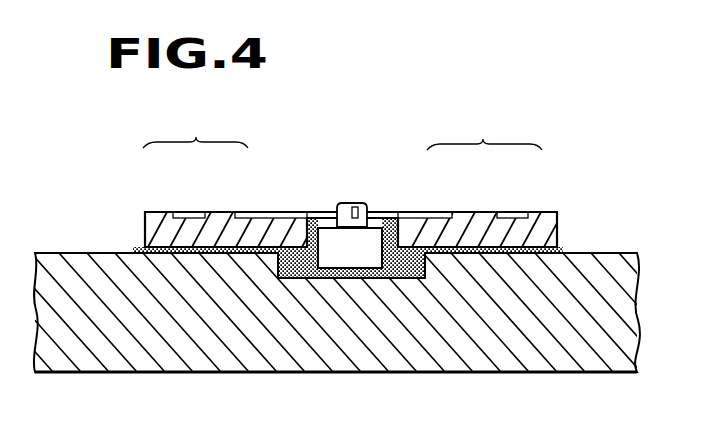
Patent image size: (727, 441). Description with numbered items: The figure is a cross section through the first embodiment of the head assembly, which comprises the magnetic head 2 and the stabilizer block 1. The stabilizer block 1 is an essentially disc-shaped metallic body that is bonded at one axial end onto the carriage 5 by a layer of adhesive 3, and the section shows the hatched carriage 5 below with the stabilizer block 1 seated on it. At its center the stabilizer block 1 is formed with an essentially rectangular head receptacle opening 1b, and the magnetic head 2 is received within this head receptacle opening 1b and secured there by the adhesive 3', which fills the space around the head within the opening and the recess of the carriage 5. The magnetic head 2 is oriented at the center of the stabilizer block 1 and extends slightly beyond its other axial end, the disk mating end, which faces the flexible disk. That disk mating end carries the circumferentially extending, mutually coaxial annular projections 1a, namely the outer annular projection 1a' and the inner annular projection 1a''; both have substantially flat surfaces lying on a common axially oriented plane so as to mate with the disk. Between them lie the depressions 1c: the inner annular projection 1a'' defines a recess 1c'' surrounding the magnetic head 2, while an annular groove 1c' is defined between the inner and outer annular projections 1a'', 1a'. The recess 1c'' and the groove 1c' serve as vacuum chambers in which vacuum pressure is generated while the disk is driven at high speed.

The stabilizer block 1 is at (212, 236).
The annular projections 1a is at (195, 128).
The outer annular projection 1a' is at (173, 183).
The inner annular projection 1a'' is at (252, 183).
The head receptacle opening 1b is at (316, 212).
The recess and groove 1c is at (484, 131).
The annular groove 1c' is at (510, 184).
The recess 1c'' is at (432, 184).
The magnetic head 2 is at (346, 215).
The adhesive 3 is at (376, 244).
The adhesive 3' is at (362, 318).
The carriage 5 is at (620, 318).